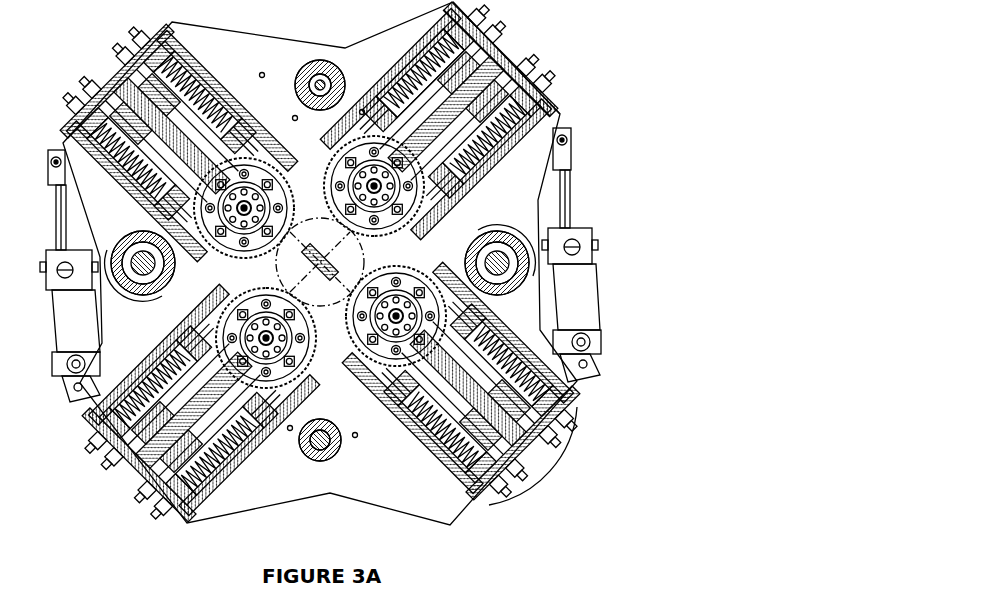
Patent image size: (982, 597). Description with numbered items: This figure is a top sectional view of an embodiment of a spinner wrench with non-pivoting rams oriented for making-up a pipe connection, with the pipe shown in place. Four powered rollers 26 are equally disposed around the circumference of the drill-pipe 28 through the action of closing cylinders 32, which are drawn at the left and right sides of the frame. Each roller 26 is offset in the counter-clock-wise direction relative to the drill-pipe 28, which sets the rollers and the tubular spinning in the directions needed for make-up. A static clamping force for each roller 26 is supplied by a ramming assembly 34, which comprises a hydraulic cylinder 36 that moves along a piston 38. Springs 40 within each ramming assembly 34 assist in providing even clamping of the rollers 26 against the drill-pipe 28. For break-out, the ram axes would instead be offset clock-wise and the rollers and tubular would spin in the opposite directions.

The powered roller 26 is at (403, 283).
The drill-pipe 28 is at (568, 138).
The closing cylinder 32 is at (603, 244).
The ramming assembly 34 is at (557, 473).
The hydraulic cylinder 36 is at (500, 150).
The piston 38 is at (447, 4).
The spring 40 is at (520, 110).